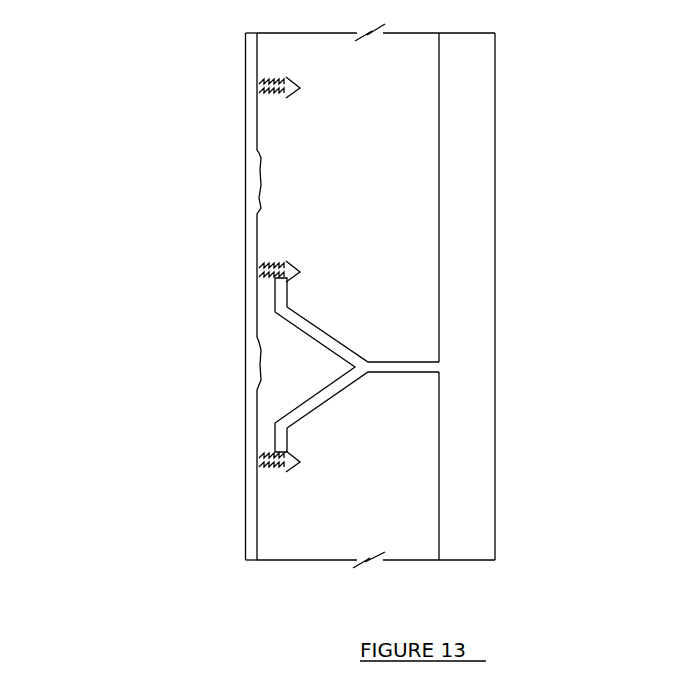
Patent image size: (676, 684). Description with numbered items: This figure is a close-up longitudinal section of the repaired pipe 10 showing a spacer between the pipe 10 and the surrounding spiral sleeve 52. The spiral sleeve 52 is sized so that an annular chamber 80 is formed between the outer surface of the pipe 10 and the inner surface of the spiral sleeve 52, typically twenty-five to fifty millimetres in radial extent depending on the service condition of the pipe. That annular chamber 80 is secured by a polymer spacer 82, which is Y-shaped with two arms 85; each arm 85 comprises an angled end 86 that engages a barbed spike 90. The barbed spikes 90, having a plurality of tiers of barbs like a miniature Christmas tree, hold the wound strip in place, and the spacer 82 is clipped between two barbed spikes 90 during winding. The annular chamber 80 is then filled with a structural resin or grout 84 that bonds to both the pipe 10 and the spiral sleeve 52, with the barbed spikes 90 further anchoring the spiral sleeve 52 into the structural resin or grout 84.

The pipe 10 is at (472, 83).
The spiral sleeve 52 is at (245, 160).
The annular chamber 80 is at (378, 496).
The polymer spacer 82 is at (350, 350).
The structural resin or grout 84 is at (415, 205).
The arm 85 is at (320, 328).
The angled end 86 is at (287, 290).
The barbed spike 90 is at (267, 270).